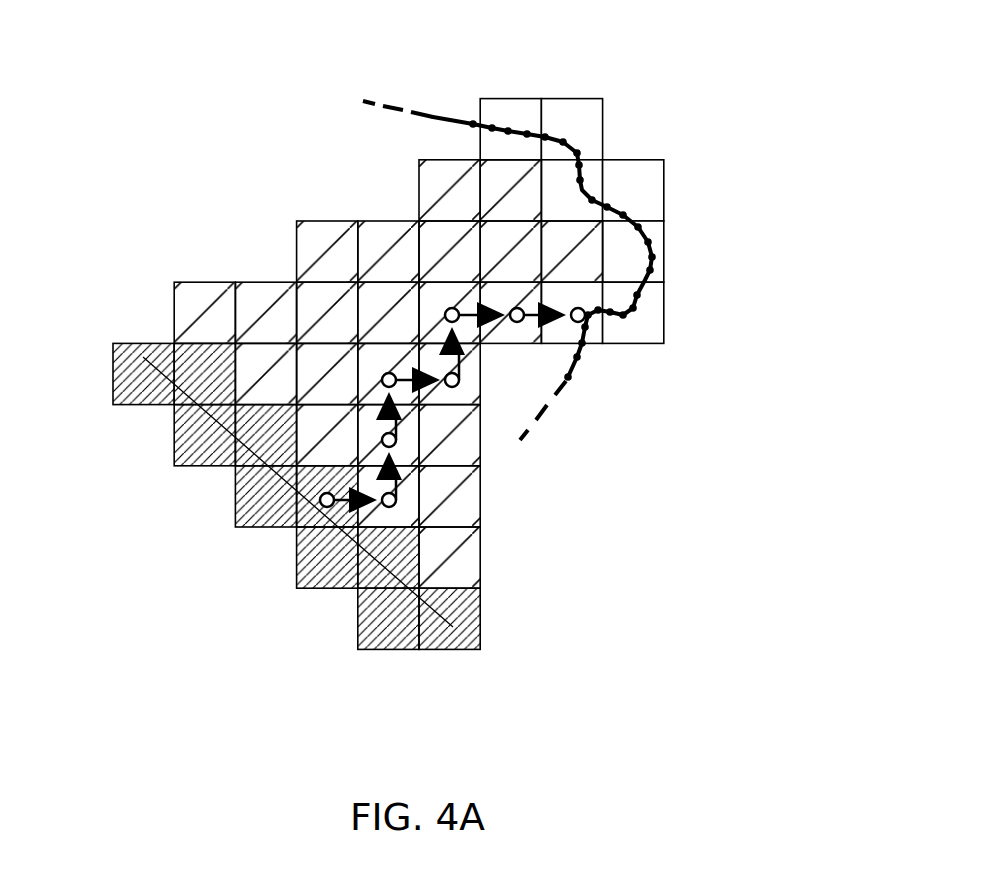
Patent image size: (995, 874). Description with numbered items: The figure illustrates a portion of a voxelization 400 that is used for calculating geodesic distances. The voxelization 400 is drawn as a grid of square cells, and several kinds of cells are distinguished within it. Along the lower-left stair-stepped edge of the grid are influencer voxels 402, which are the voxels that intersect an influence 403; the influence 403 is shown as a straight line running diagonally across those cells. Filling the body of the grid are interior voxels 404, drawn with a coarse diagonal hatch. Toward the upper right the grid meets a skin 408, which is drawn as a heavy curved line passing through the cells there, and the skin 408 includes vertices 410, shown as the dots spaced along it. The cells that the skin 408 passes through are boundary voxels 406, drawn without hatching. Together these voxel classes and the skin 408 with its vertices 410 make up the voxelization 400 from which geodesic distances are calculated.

The voxelization 400 is at (450, 329).
The influencer voxels 402 is at (177, 377).
The influence 403 is at (212, 415).
The interior voxels 404 is at (268, 282).
The boundary voxels 406 is at (515, 98).
The skin 408 is at (465, 115).
The vertices 410 is at (653, 241).